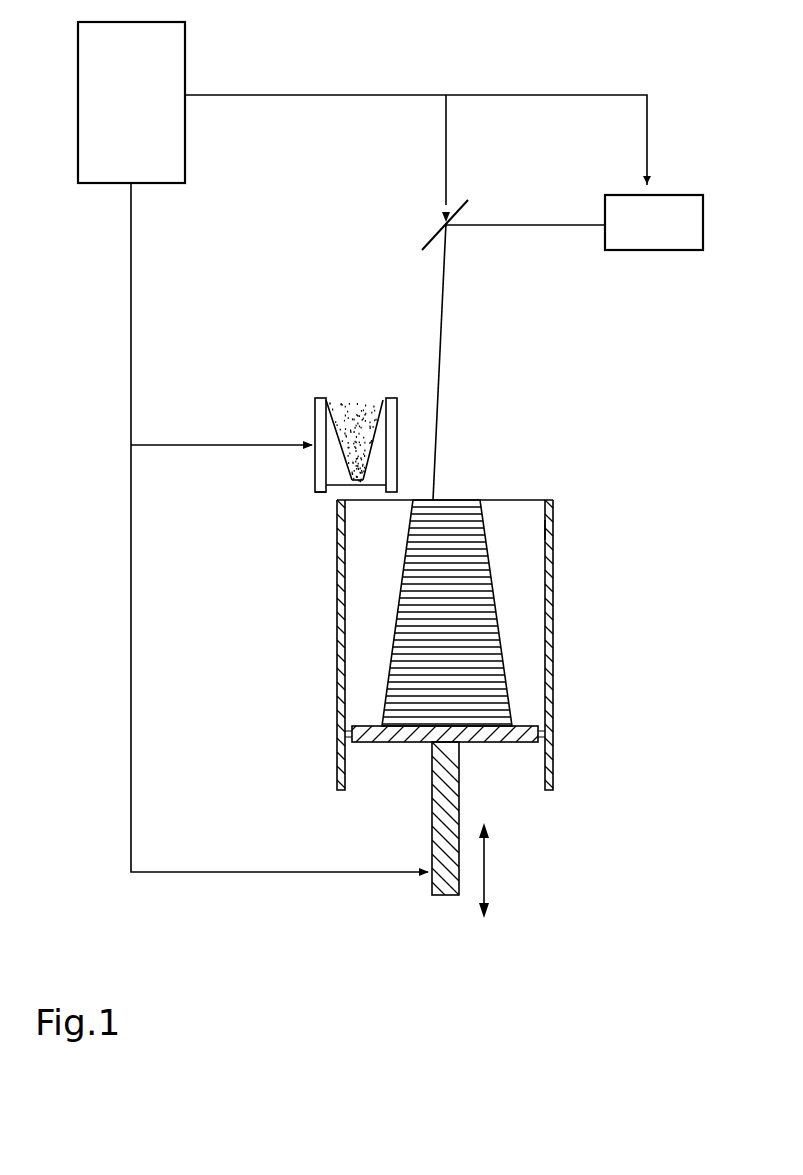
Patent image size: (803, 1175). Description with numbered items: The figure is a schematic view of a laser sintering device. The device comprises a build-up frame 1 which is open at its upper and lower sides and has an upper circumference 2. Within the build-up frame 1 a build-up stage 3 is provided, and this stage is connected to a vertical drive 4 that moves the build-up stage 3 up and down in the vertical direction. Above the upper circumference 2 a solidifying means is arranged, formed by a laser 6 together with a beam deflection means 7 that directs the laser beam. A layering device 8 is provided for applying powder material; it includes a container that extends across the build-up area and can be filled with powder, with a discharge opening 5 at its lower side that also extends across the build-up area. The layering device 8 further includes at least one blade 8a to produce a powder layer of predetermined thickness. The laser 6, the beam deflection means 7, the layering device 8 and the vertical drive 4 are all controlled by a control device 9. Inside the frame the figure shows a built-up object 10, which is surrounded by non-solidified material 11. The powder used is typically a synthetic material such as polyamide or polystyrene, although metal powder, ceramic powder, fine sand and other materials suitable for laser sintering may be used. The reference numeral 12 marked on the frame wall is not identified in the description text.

The build-up frame 1 is at (553, 590).
The upper circumference 2 is at (550, 500).
The build-up stage 3 is at (520, 724).
The vertical drive 4 is at (428, 800).
The discharge opening 5 is at (352, 486).
The laser 6 is at (683, 195).
The beam deflection means 7 is at (462, 208).
The layering device 8 is at (310, 408).
The blade 8a is at (320, 495).
The control device 9 is at (185, 47).
The built-up object 10 is at (508, 645).
The non-solidified material 11 is at (500, 500).
The wall lining 12 is at (558, 527).